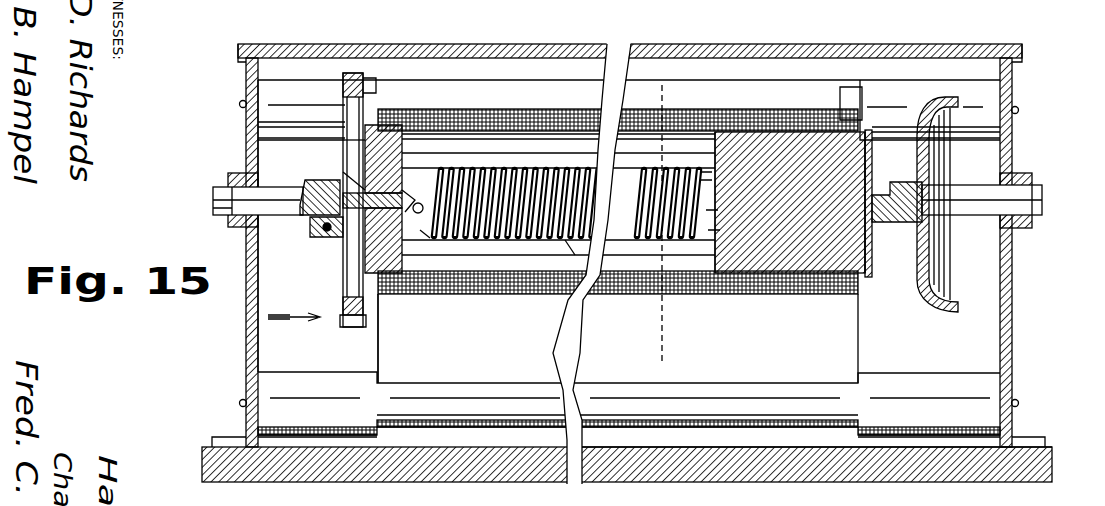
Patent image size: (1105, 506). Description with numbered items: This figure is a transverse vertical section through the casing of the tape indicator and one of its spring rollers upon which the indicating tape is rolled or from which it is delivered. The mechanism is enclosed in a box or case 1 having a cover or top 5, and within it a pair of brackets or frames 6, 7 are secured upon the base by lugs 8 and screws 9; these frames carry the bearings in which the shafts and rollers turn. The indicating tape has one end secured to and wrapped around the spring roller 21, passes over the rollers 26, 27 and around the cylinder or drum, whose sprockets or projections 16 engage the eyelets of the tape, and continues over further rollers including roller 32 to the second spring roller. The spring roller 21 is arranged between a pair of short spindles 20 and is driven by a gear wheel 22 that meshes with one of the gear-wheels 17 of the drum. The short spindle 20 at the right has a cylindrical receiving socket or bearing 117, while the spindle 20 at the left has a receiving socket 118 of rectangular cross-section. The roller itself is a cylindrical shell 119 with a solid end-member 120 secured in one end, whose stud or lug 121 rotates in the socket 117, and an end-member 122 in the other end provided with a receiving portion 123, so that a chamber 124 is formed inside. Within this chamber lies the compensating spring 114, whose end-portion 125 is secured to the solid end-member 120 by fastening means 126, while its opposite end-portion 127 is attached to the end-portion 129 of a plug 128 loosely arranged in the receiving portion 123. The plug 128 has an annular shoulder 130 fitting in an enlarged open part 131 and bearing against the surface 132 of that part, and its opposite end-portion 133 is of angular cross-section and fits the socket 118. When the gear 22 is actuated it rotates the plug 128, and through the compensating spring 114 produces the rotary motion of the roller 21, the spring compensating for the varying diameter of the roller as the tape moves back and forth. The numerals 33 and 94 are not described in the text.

The box or case 1 is at (224, 251).
The cover or top 5 is at (755, 45).
The bracket or frame 6 is at (1012, 292).
The bracket or frame 7 is at (246, 327).
The lugs 8 is at (230, 437).
The screws 9 is at (660, 470).
The sprockets or projections 16 is at (395, 86).
The gear-wheels 17 is at (677, 213).
The short spindles 20 is at (290, 196).
The spring roller 21 is at (775, 296).
The gear wheel 22 is at (345, 290).
The roller 26 is at (297, 88).
The roller 27 is at (458, 386).
The roller 32 is at (527, 440).
The roller bearing band 33 is at (795, 109).
The cup 94 is at (935, 302).
The compensating spring 114 is at (526, 238).
The cylindrical receiving socket or bearing 117 is at (882, 222).
The receiving socket 118 is at (318, 220).
The cylindrical shell 119 is at (532, 109).
The solid end-portion or member 120 is at (730, 284).
The stud or lug 121 is at (872, 182).
The end-portion or member 122 is at (403, 296).
The receiving portion 123 is at (410, 228).
The chamber 124 is at (573, 258).
The end-portion of spring 125 is at (692, 165).
The fastening means 126 is at (698, 236).
The end-portion of spring 127 is at (430, 232).
The plug 128 is at (308, 220).
The end-portion of plug 129 is at (410, 186).
The annular shoulder 130 is at (342, 174).
The enlarged open part 131 is at (347, 140).
The surface 132 is at (372, 178).
The end-portion of plug 133 is at (327, 233).